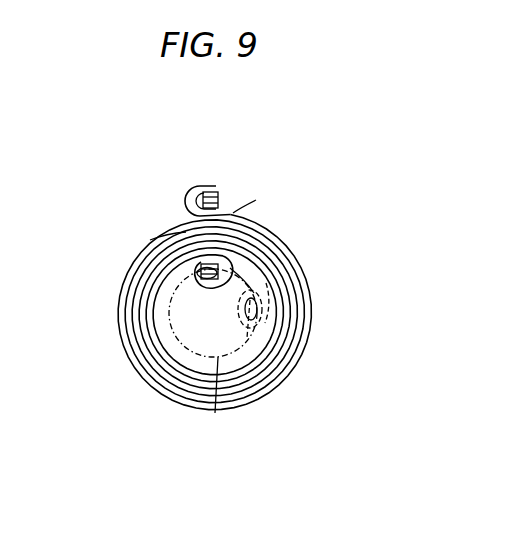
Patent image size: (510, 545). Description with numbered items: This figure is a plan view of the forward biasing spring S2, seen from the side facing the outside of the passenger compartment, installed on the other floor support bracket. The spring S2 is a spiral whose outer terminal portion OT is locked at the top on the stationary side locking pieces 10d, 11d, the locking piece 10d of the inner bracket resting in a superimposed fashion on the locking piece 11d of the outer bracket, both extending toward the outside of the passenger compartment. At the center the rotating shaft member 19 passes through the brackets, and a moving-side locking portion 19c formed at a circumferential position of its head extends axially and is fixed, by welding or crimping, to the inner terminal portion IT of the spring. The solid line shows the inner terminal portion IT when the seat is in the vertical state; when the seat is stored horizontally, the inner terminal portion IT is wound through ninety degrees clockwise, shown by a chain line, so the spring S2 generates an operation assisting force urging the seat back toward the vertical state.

The forward biasing spring S2 is at (297, 268).
The outer terminal portion OT is at (194, 188).
The inner terminal portion IT is at (204, 279).
The stationary side locking piece 10d is at (209, 190).
The stationary side locking piece 11d is at (256, 200).
The moving-side locking portion 19c is at (150, 240).
The rotating shaft member 19 is at (214, 414).